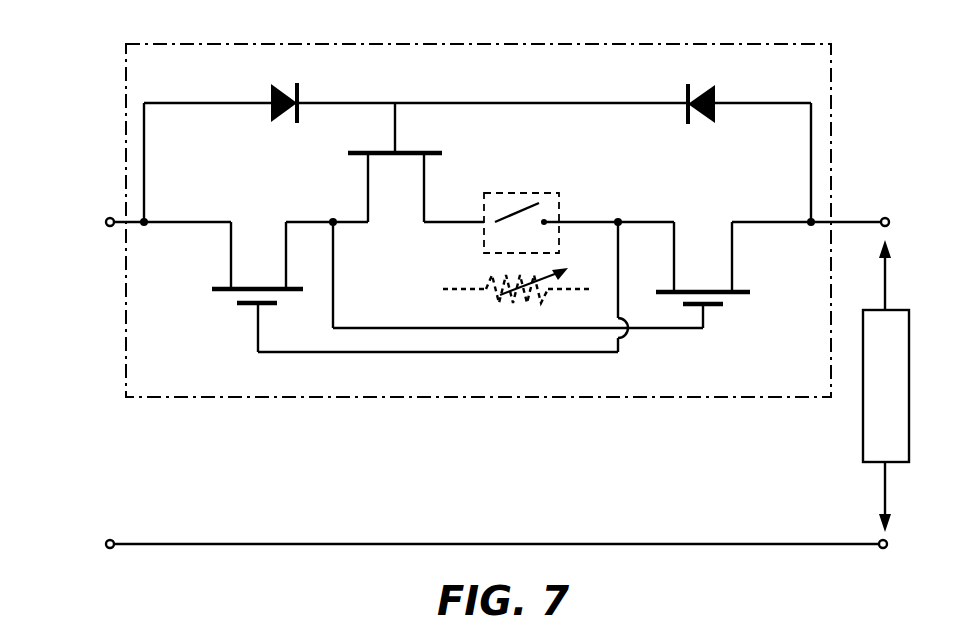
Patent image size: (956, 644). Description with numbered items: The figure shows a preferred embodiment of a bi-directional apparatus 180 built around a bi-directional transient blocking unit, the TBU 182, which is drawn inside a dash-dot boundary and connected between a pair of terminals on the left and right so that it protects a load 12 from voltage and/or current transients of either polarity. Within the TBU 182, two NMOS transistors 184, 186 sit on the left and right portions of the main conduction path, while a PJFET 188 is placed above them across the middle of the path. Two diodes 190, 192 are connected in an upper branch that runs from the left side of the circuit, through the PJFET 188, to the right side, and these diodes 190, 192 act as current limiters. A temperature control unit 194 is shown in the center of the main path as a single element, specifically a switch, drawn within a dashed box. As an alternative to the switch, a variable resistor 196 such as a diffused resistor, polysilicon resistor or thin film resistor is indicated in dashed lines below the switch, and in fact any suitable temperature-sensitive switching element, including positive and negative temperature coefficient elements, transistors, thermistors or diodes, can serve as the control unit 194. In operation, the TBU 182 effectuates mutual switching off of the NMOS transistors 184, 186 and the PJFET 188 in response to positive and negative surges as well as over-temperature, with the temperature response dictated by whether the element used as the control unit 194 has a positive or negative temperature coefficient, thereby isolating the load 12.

The load 12 is at (864, 441).
The apparatus 180 is at (108, 42).
The bi-directional TBU 182 is at (832, 100).
The NMOS transistor 184 is at (218, 294).
The NMOS transistor 186 is at (717, 308).
The PJFET 188 is at (436, 150).
The diode 190 is at (268, 114).
The diode 192 is at (719, 110).
The temperature control unit 194 is at (583, 172).
The variable resistor 196 is at (462, 289).